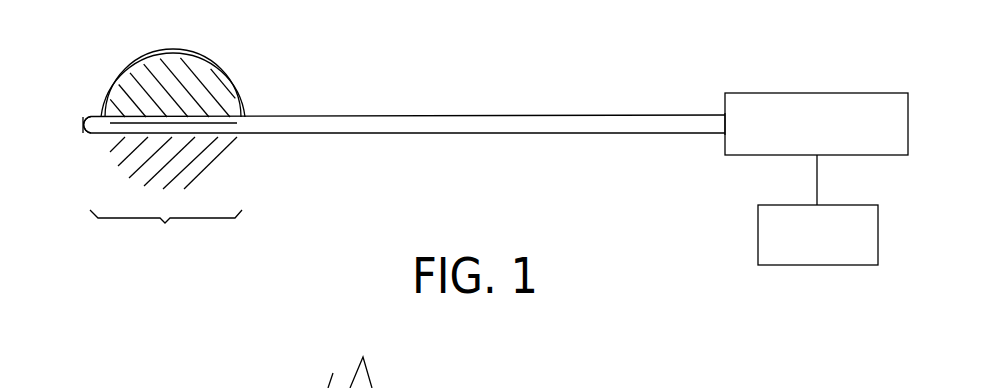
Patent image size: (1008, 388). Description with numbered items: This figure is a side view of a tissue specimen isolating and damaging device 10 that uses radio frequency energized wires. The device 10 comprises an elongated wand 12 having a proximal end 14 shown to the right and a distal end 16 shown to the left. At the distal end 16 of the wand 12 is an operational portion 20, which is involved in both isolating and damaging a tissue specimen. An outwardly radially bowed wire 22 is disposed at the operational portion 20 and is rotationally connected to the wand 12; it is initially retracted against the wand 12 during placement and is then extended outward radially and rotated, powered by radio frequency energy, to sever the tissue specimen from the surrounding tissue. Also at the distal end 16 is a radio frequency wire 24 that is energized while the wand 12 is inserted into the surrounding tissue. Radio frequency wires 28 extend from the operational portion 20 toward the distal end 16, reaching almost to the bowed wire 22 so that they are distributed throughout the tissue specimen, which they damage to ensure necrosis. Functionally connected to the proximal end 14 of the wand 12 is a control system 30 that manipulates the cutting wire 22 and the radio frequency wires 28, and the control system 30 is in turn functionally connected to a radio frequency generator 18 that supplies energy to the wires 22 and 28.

The tissue specimen isolating and damaging device 10 is at (598, 51).
The wand 12 is at (417, 112).
The proximal end 14 is at (725, 113).
The distal end 16 is at (102, 115).
The radio frequency generator 18 is at (758, 228).
The operational portion 20 is at (166, 232).
The outwardly radially bowed wire 22 is at (180, 53).
The radio frequency wire 24 is at (90, 133).
The radio frequency wires 28 is at (155, 75).
The control system 30 is at (832, 93).